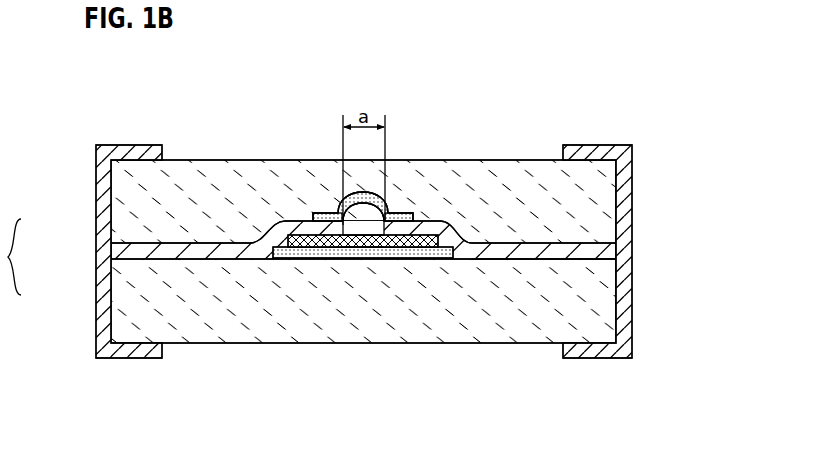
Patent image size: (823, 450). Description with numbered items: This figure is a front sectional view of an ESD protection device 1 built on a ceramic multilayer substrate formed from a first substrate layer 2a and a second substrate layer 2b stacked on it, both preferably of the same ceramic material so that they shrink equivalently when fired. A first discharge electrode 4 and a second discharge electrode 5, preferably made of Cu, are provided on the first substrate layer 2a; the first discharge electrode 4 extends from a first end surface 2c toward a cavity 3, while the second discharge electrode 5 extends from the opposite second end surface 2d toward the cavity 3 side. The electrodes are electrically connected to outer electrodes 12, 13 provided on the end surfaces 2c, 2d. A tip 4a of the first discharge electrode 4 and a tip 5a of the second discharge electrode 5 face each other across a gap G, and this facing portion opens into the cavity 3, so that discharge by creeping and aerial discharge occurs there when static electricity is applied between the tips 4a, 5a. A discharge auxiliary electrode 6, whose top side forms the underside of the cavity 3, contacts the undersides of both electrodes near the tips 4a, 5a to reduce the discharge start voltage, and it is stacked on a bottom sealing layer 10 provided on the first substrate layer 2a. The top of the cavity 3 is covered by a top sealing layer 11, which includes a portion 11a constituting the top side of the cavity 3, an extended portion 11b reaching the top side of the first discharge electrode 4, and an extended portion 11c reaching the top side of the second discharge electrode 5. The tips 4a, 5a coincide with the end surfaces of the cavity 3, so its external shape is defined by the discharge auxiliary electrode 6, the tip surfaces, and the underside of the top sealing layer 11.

The ESD protection device 1 is at (137, 128).
The first substrate layer 2a is at (110, 302).
The second substrate layer 2b is at (109, 203).
The first end surface 2c is at (110, 323).
The second end surface 2d is at (617, 205).
The cavity 3 is at (365, 217).
The first discharge electrode 4 is at (243, 261).
The tip of the first discharge electrode 4a is at (358, 247).
The second discharge electrode 5 is at (502, 261).
The tip of the second discharge electrode 5a is at (380, 222).
The discharge auxiliary electrode 6 is at (300, 238).
The bottom sealing layer 10 is at (305, 260).
The top sealing layer 11 is at (392, 206).
The portion constituting the top side of the cavity 11a is at (355, 172).
The extended portion 11b is at (323, 215).
The extended portion 11c is at (404, 208).
The outer electrode 12 is at (96, 153).
The outer electrode 13 is at (632, 208).
The gap G is at (360, 222).